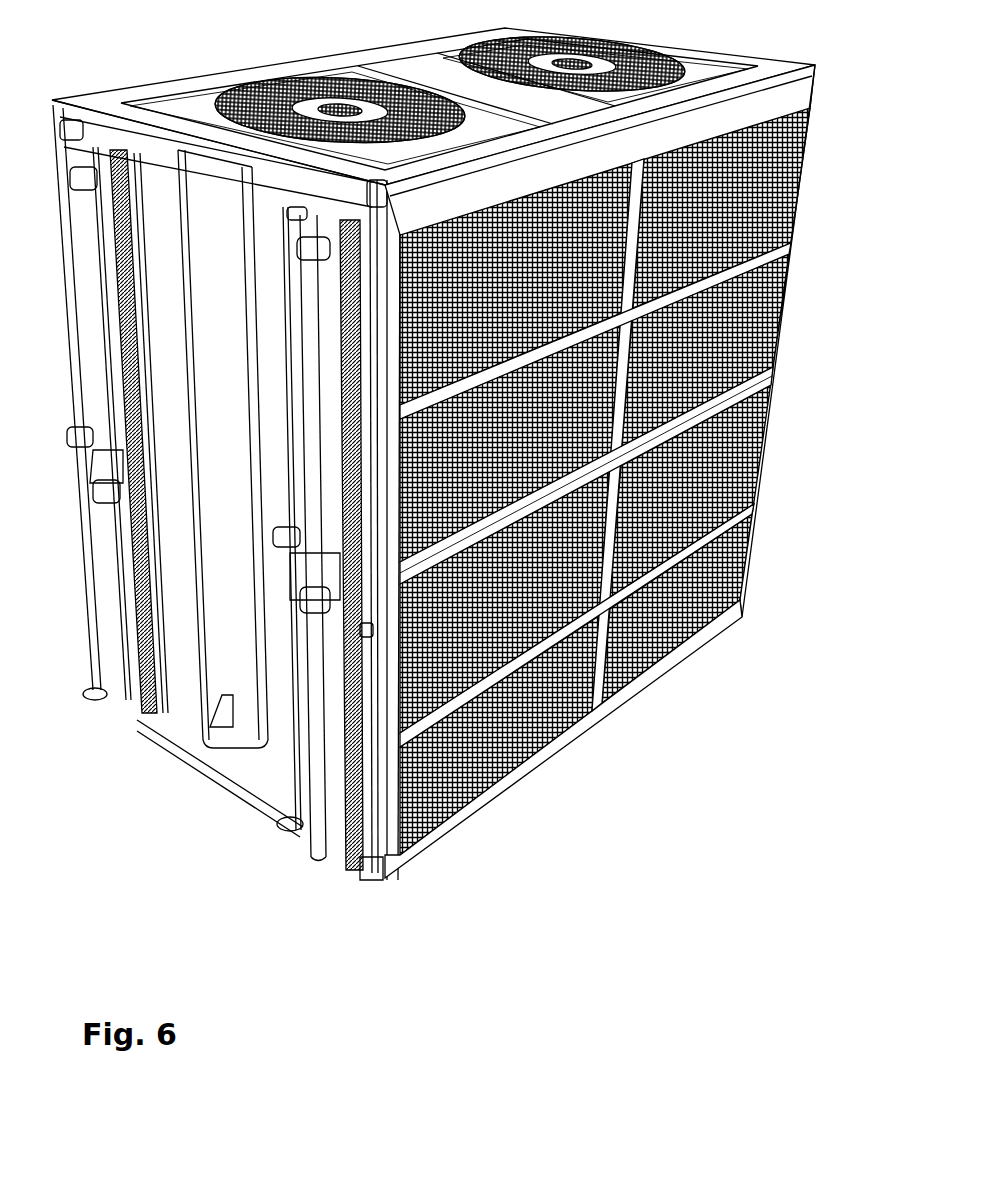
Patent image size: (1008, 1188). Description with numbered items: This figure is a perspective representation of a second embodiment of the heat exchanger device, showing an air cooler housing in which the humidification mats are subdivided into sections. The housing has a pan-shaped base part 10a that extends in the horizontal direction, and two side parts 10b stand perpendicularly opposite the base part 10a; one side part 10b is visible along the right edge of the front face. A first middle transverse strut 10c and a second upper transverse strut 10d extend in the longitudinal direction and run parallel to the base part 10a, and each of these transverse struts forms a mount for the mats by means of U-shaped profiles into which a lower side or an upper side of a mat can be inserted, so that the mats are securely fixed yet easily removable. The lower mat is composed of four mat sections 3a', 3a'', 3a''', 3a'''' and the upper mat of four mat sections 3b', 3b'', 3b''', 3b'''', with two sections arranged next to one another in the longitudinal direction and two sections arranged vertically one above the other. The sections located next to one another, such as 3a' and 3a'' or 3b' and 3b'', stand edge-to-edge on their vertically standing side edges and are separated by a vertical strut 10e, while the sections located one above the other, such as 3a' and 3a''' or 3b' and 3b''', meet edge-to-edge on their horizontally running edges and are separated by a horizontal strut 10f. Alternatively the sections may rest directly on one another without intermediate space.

The mat section 3a' is at (499, 735).
The mat section 3a'' is at (677, 608).
The mat section 3a''' is at (504, 602).
The mat section 3a'''' is at (690, 491).
The mat section 3b' is at (510, 443).
The mat section 3b'' is at (705, 350).
The mat section 3b''' is at (516, 284).
The mat section 3b'''' is at (721, 208).
The base part 10a is at (417, 843).
The side part 10b is at (767, 467).
The first middle transverse strut 10c is at (764, 391).
The second upper transverse strut 10d is at (802, 93).
The vertical strut 10e is at (597, 710).
The horizontal strut 10f is at (767, 258).